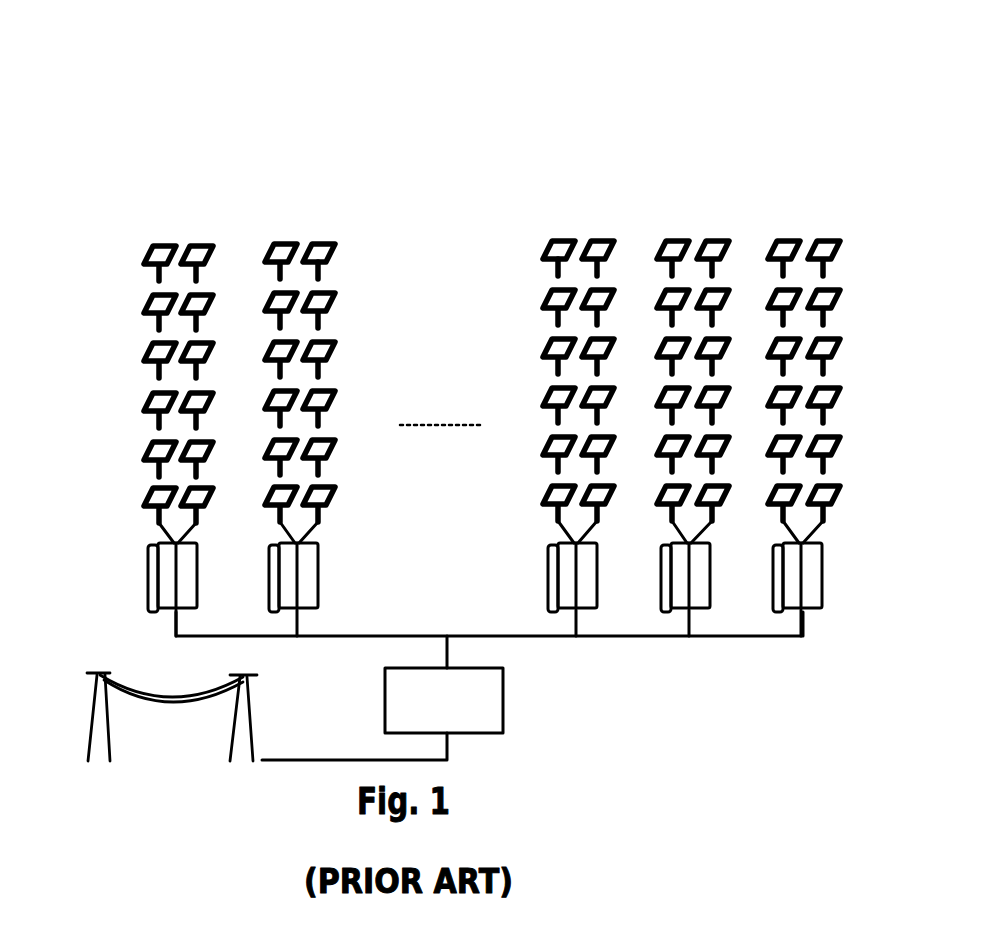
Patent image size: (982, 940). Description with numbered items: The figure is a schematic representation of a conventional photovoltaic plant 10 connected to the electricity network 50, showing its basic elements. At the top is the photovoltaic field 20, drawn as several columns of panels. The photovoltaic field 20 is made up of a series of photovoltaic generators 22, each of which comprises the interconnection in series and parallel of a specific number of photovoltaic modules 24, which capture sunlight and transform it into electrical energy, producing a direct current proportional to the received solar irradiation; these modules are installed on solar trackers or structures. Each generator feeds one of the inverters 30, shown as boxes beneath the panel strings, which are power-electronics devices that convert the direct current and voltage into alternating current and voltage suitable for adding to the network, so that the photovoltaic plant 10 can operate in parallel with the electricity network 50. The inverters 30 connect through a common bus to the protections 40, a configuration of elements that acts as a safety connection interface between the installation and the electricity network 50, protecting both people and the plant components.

The photovoltaic plant 10 is at (503, 78).
The photovoltaic field 20 is at (268, 203).
The photovoltaic generator 22 is at (366, 223).
The photovoltaic module 24 is at (332, 245).
The inverter 30 is at (148, 560).
The protections 40 is at (487, 727).
The electricity network 50 is at (138, 654).